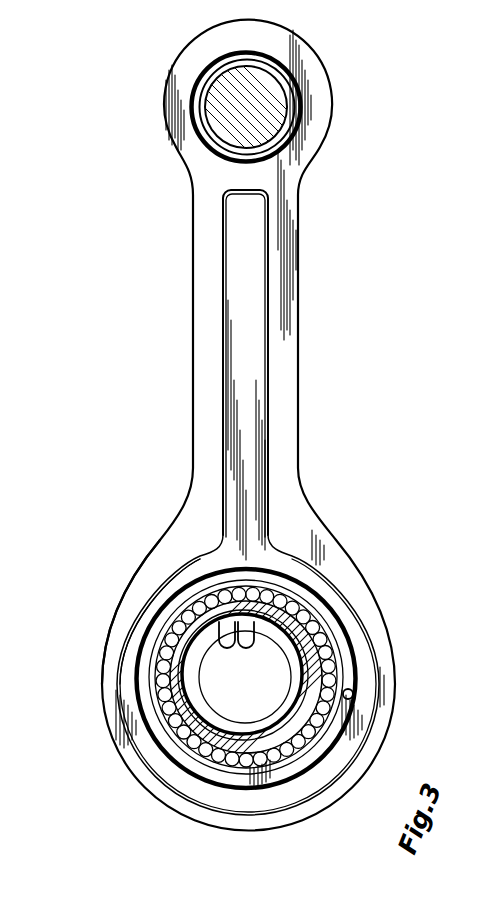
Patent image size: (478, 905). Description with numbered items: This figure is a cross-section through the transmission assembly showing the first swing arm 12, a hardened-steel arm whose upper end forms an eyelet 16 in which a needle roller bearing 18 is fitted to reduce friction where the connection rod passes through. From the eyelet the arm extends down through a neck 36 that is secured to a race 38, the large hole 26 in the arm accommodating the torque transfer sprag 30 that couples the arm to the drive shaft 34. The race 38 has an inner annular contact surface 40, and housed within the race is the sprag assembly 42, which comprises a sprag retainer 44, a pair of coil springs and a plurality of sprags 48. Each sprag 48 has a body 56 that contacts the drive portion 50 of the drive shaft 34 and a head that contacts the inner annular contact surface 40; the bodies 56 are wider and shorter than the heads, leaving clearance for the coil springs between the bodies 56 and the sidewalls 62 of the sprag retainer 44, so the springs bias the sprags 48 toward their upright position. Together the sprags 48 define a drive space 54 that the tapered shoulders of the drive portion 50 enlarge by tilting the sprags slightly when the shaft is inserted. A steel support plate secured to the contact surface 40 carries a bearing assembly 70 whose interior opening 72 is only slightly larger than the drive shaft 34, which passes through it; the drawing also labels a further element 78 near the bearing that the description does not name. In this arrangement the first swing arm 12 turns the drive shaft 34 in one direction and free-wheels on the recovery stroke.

The first swing arm 12 is at (330, 197).
The eyelet 16 is at (313, 125).
The needle roller bearing 18 is at (296, 103).
The large hole 26 is at (339, 628).
The torque transfer sprag 30 is at (354, 646).
The drive shaft 34 is at (343, 675).
The neck 36 is at (285, 257).
The race 38 is at (350, 580).
The inner annular contact surface 40 is at (353, 699).
The sprag assembly 42 is at (154, 604).
The sprag retainer 44 is at (151, 636).
The sprags 48 is at (163, 657).
The drive portion 50 is at (170, 688).
The drive space 54 is at (168, 718).
The body 56 is at (176, 755).
The sidewalls 62 is at (178, 752).
The bearing assembly 70 is at (203, 628).
The interior opening 72 is at (226, 632).
The raceway surface 78 is at (247, 628).